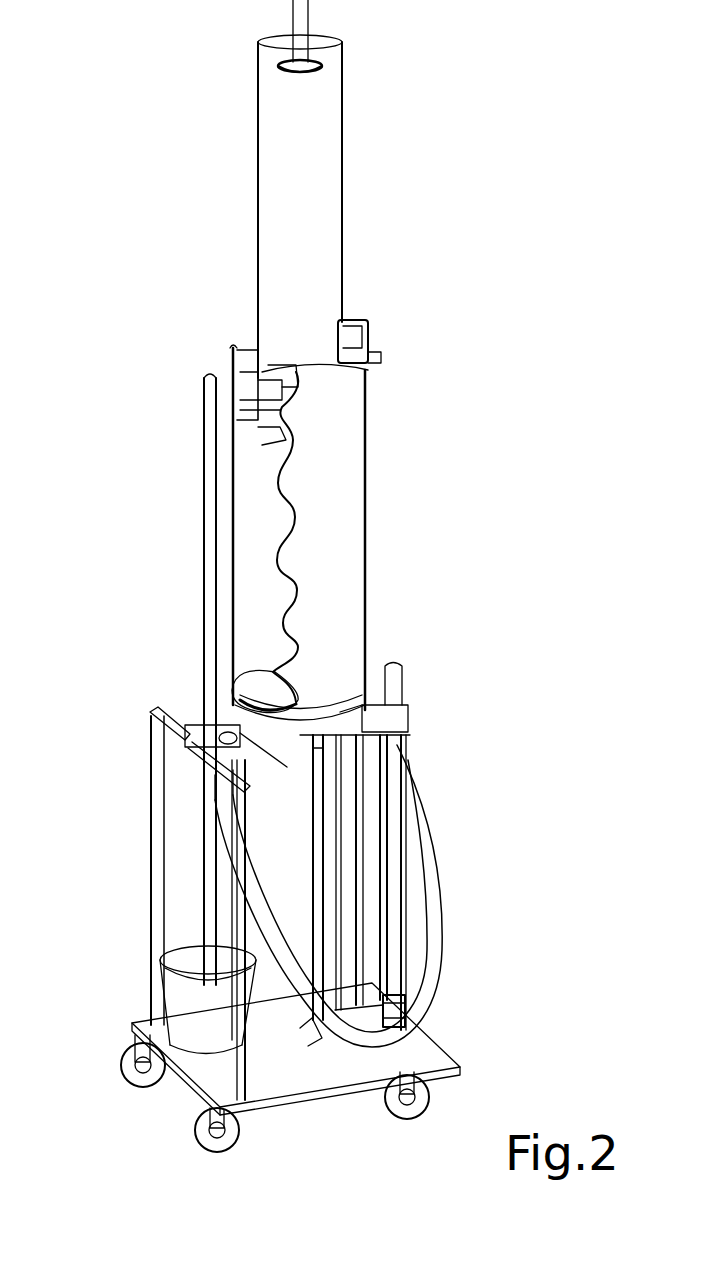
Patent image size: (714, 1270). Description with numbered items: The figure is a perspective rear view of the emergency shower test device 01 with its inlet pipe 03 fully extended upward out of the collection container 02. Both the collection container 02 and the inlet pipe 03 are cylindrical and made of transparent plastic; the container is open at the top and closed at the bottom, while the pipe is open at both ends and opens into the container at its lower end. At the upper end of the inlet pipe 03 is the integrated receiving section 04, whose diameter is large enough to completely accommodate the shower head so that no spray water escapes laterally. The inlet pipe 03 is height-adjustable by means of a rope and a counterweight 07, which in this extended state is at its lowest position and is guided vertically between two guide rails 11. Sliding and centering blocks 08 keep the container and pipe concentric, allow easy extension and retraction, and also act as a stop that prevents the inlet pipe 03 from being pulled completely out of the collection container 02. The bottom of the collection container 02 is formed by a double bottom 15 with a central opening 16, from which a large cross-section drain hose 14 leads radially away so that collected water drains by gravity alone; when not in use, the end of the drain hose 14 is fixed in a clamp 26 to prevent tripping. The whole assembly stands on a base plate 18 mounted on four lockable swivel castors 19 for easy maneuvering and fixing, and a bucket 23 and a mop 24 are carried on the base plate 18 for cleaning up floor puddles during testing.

The emergency shower test device 01 is at (158, 195).
The collection container 02 is at (335, 558).
The inlet pipe 03 is at (310, 252).
The receiving section 04 is at (332, 92).
The counterweight 07 is at (367, 1017).
The sliding and centering blocks 08 is at (275, 435).
The guide rails 11 is at (328, 903).
The drain hose 14 is at (417, 845).
The double bottom 15 is at (335, 727).
The central opening 16 is at (245, 700).
The base plate 18 is at (283, 1058).
The lockable swivel castors 19 is at (195, 1135).
The bucket 23 is at (185, 1020).
The mop 24 is at (210, 876).
The clamp 26 is at (207, 755).